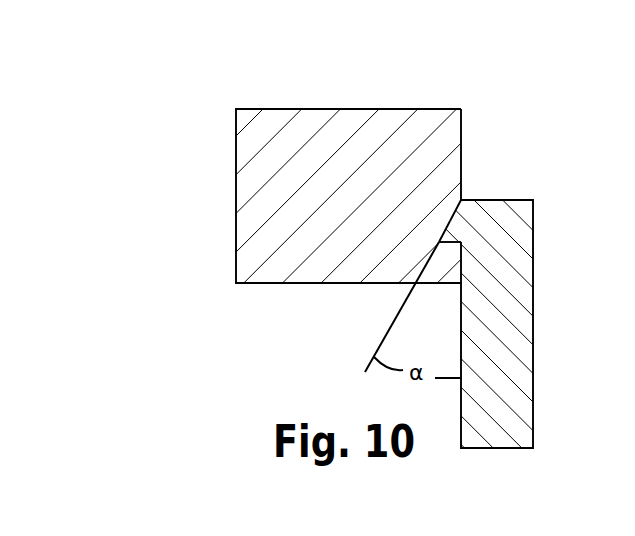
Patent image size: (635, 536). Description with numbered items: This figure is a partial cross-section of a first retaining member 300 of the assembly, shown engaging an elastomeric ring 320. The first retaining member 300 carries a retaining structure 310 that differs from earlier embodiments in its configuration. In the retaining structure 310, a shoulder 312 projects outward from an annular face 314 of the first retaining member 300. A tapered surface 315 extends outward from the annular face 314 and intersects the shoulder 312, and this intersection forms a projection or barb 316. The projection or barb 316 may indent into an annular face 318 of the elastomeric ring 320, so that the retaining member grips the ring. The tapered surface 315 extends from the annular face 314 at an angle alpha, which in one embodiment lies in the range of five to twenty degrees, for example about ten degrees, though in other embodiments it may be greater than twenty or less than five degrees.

The first retaining member 300 is at (508, 302).
The retaining structure 310 is at (433, 225).
The shoulder 312 is at (450, 246).
The annular face 314 is at (459, 268).
The tapered surface 315 is at (451, 208).
The projection or barb 316 is at (445, 232).
The annular face of elastomeric ring 318 is at (462, 124).
The elastomeric ring 320 is at (391, 120).